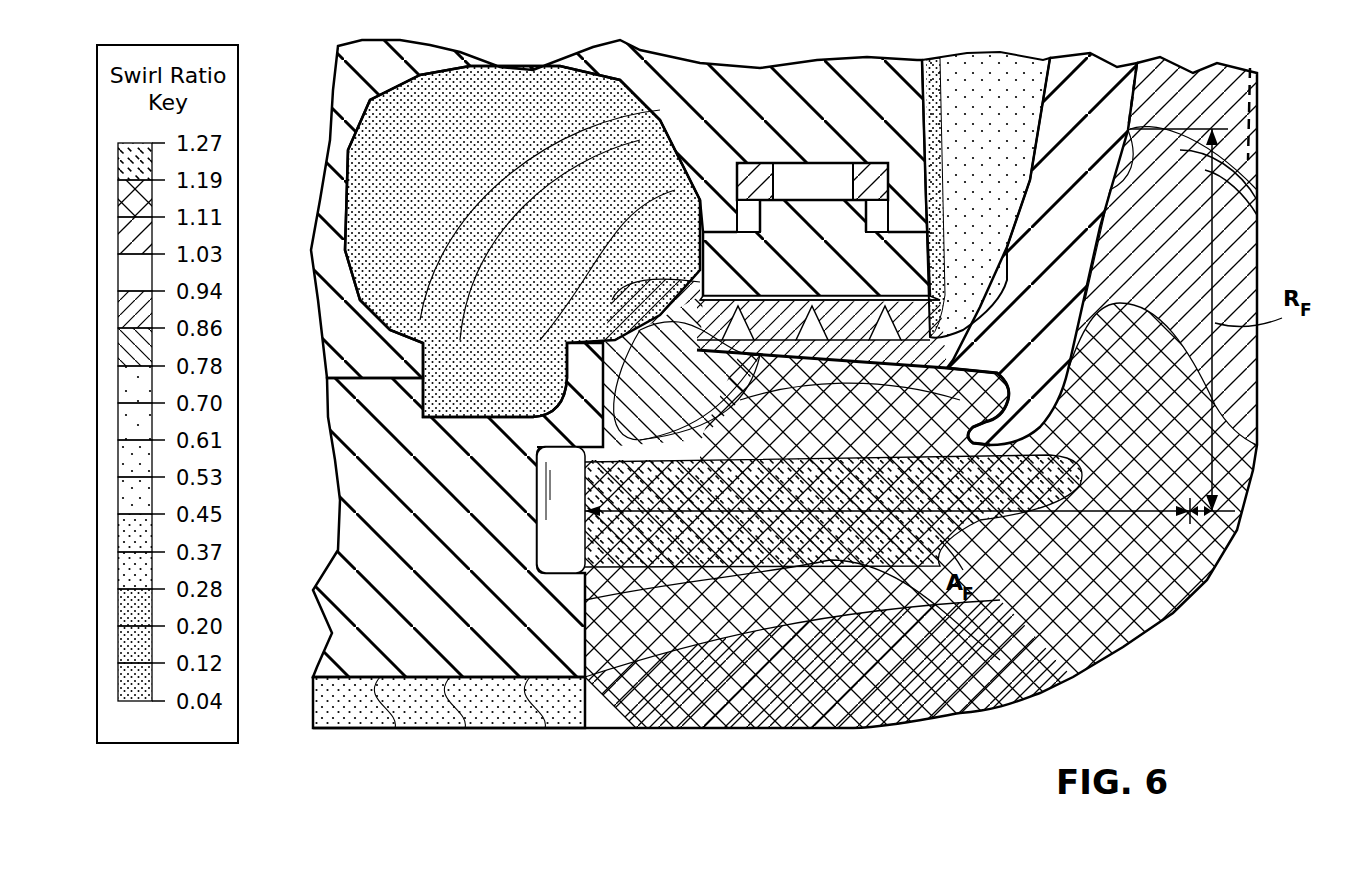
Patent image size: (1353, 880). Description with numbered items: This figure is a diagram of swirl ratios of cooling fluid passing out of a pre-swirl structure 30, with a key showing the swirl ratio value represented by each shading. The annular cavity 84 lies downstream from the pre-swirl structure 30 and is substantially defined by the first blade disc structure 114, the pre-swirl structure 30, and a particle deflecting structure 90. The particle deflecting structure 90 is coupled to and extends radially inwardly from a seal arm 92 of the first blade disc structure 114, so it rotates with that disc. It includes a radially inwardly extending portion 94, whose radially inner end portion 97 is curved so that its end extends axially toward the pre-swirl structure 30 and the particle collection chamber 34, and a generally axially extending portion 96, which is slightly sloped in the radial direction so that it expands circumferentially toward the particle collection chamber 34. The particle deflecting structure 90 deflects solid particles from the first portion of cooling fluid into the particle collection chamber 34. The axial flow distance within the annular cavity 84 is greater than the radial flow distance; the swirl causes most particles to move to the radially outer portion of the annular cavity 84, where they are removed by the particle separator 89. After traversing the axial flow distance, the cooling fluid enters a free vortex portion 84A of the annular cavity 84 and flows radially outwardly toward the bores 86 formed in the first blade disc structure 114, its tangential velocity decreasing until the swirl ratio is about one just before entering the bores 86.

The particle collection chamber 34 is at (460, 104).
The radially inner end portion 97 is at (918, 310).
The seal arm 92 is at (1073, 210).
The first blade disc structure 114 is at (1264, 123).
The bores 86 is at (1220, 155).
The free vortex portion 84A is at (1232, 352).
The particle deflecting structure 90 is at (1070, 382).
The radially inwardly extending portion 94 is at (1043, 407).
The pre-swirl structure 30 is at (590, 670).
The axially extending portion 96 is at (770, 352).
The particle separator 89 is at (865, 372).
The annular cavity 84 is at (903, 692).